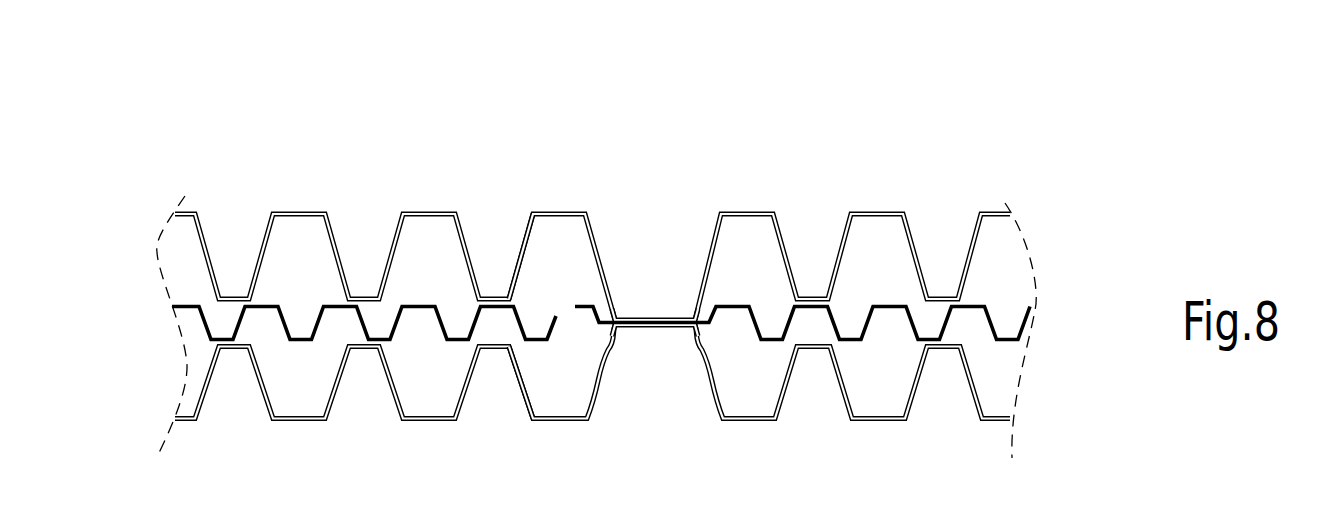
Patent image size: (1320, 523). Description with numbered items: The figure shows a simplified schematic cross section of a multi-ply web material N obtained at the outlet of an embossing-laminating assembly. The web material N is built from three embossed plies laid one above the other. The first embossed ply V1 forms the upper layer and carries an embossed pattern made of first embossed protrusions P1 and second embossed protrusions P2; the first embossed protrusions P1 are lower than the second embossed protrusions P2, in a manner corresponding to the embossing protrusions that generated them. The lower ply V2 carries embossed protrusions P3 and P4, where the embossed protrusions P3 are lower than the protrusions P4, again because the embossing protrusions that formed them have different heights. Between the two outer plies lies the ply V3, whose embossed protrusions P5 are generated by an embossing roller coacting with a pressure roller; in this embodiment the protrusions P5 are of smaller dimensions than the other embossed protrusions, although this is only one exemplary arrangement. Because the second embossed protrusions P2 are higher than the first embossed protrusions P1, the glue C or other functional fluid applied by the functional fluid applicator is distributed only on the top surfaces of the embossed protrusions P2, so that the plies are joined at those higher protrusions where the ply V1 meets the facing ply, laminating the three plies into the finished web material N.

The multi-ply web material N is at (722, 151).
The first embossed protrusions P1 is at (395, 256).
The second embossed protrusions P2 is at (605, 268).
The embossed protrusions P3 is at (392, 388).
The embossed protrusions P4 is at (602, 377).
The embossed protrusions P5 is at (322, 319).
The first embossed ply V1 is at (787, 221).
The ply V2 is at (835, 383).
The ply V3 is at (983, 298).
The glue C is at (655, 322).